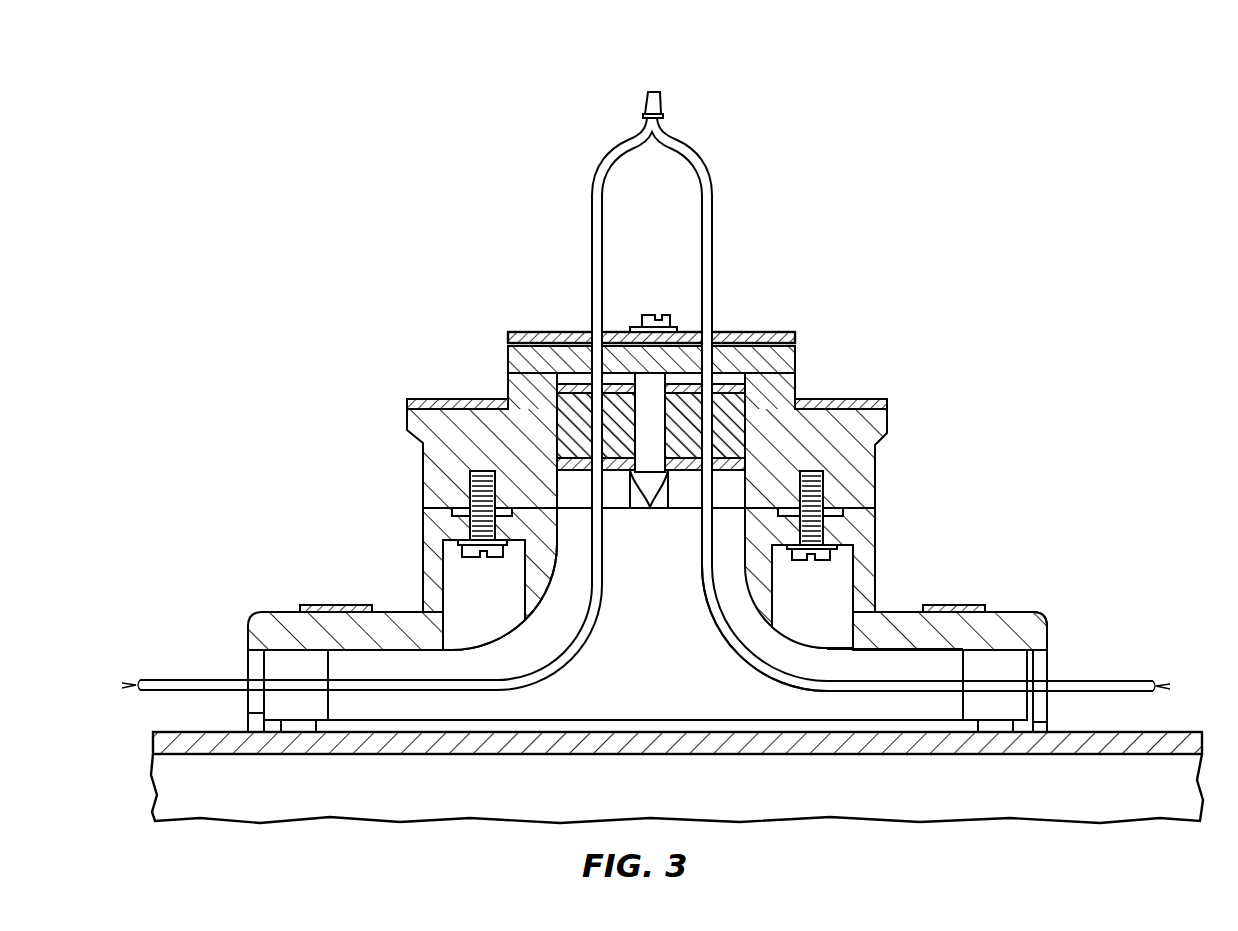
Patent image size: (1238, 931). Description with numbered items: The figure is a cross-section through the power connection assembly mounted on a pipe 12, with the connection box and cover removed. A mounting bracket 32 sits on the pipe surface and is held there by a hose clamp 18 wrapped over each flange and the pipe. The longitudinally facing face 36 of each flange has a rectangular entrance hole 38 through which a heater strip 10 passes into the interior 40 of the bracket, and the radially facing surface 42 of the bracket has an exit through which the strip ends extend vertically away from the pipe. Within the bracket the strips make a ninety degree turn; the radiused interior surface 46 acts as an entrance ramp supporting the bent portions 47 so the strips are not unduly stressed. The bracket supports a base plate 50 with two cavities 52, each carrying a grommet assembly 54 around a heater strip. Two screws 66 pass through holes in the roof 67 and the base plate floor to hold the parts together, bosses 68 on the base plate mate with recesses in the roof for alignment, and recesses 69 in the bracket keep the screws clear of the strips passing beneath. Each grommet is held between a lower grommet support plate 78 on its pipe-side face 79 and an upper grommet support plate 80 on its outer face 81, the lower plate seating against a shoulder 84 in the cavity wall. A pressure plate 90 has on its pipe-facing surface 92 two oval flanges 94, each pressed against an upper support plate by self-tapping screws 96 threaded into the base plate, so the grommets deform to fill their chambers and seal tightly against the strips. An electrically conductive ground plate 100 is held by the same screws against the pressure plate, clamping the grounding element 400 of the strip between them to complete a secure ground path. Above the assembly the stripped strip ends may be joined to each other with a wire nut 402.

The heater strip 10 is at (160, 680).
The pipe 12 is at (1150, 733).
The hose clamp 18 is at (320, 606).
The mounting bracket 32 is at (1048, 625).
The face 36 is at (255, 616).
The entrance hole 38 is at (250, 702).
The interior 40 is at (637, 647).
The surface 42 is at (876, 497).
The interior surface 46 is at (548, 625).
The bent portion 47 is at (760, 662).
The base plate 50 is at (887, 430).
The cavity 52 is at (557, 420).
The grommet assembly 54 is at (612, 372).
The screw 66 is at (470, 500).
The roof 67 is at (462, 512).
The boss 68 is at (557, 530).
The recess 69 is at (450, 583).
The lower grommet support plate 78 is at (562, 464).
The face 79 is at (650, 508).
The upper grommet support plate 80 is at (745, 390).
The face 81 is at (562, 378).
The shoulder 84 is at (745, 470).
The pressure plate 90 is at (795, 355).
The surface 92 is at (508, 383).
The flange 94 is at (590, 345).
The self-tapping screw 96 is at (645, 327).
The ground plate 100 is at (518, 333).
The grounding element 400 is at (698, 330).
The wire nut 402 is at (665, 103).